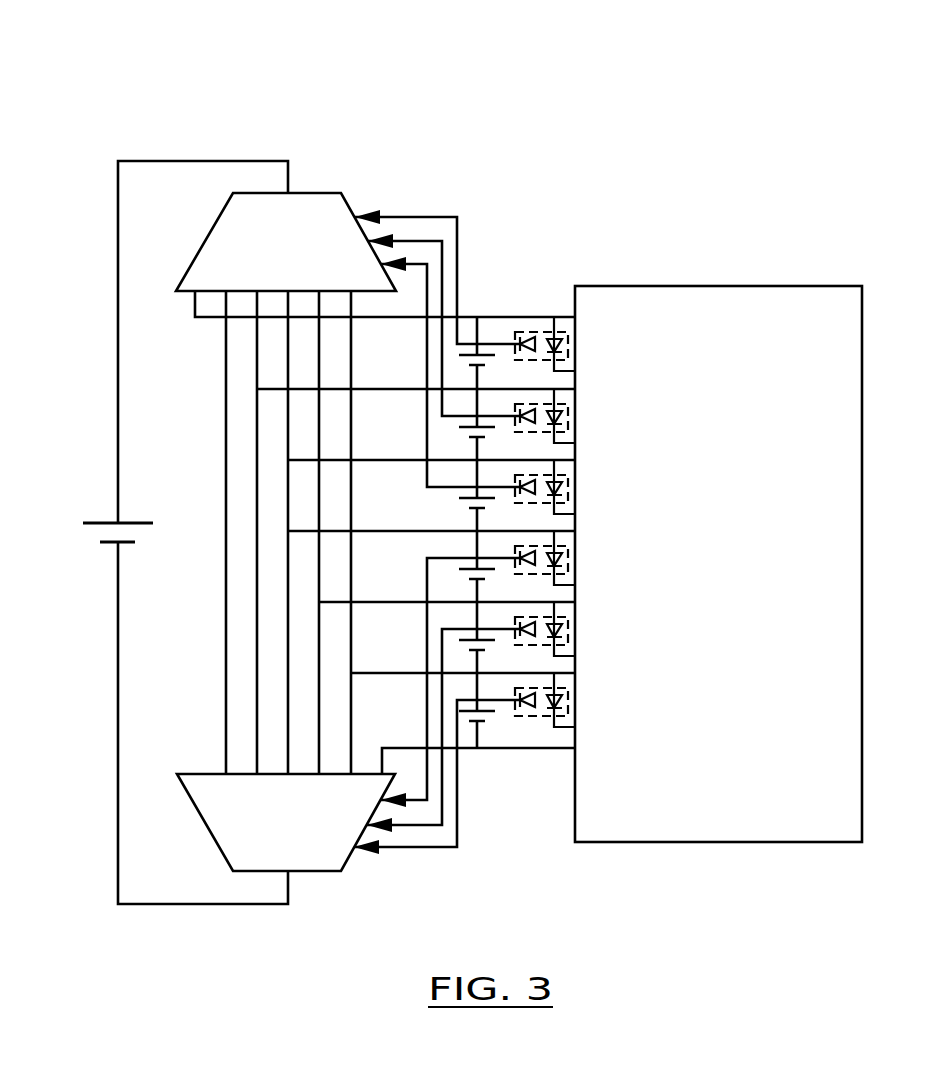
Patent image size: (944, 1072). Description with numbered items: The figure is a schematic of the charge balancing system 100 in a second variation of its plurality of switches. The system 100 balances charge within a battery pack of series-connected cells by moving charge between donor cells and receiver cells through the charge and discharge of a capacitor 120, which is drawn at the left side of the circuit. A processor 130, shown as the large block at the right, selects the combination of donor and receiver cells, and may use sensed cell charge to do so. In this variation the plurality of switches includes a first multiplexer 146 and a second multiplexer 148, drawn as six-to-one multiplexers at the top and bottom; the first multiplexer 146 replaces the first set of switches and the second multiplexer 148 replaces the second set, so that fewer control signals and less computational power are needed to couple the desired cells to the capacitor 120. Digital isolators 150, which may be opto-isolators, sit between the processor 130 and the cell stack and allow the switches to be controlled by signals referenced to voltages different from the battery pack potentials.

The charge balancing system 100 is at (201, 70).
The capacitor 120 is at (61, 554).
The processor 130 is at (692, 580).
The first multiplexer 146 is at (313, 193).
The second multiplexer 148 is at (313, 871).
The digital isolators 150 is at (537, 330).